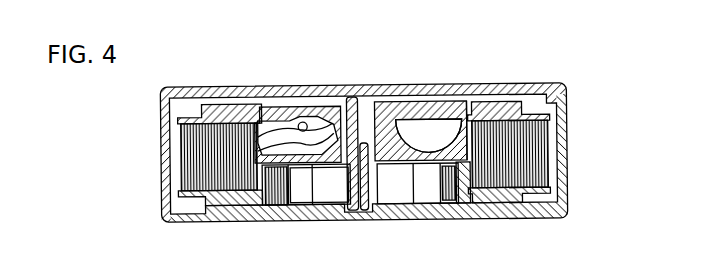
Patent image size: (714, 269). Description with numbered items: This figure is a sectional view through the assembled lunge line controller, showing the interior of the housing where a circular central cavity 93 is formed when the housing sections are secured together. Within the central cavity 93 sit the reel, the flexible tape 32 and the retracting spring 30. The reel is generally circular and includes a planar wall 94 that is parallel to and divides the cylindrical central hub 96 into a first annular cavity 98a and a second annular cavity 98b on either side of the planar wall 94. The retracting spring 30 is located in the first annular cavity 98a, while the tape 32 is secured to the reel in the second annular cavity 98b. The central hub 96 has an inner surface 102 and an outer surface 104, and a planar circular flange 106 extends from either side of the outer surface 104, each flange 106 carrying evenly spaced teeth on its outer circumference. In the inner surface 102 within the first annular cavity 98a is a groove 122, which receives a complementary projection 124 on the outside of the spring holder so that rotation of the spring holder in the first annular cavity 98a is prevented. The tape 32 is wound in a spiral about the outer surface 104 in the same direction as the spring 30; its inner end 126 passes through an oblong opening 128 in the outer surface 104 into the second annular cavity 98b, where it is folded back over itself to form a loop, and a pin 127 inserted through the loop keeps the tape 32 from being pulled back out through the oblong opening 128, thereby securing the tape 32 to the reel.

The circular central cavity 93 is at (561, 101).
The flexible tape 32 is at (183, 138).
The oblong opening 128 is at (257, 138).
The inner end of tape 126 is at (297, 128).
The pin 127 is at (303, 122).
The retracting spring 30 is at (283, 206).
The planar wall 94 is at (339, 97).
The inner surface of hub 102 is at (414, 163).
The cylindrical central hub 96 is at (410, 124).
The second annular cavity 98b is at (443, 130).
The groove 122 is at (468, 122).
The first annular cavity 98a is at (450, 203).
The projection 124 is at (467, 193).
The outer surface of hub 104 is at (477, 153).
The planar circular flange 106 is at (522, 198).